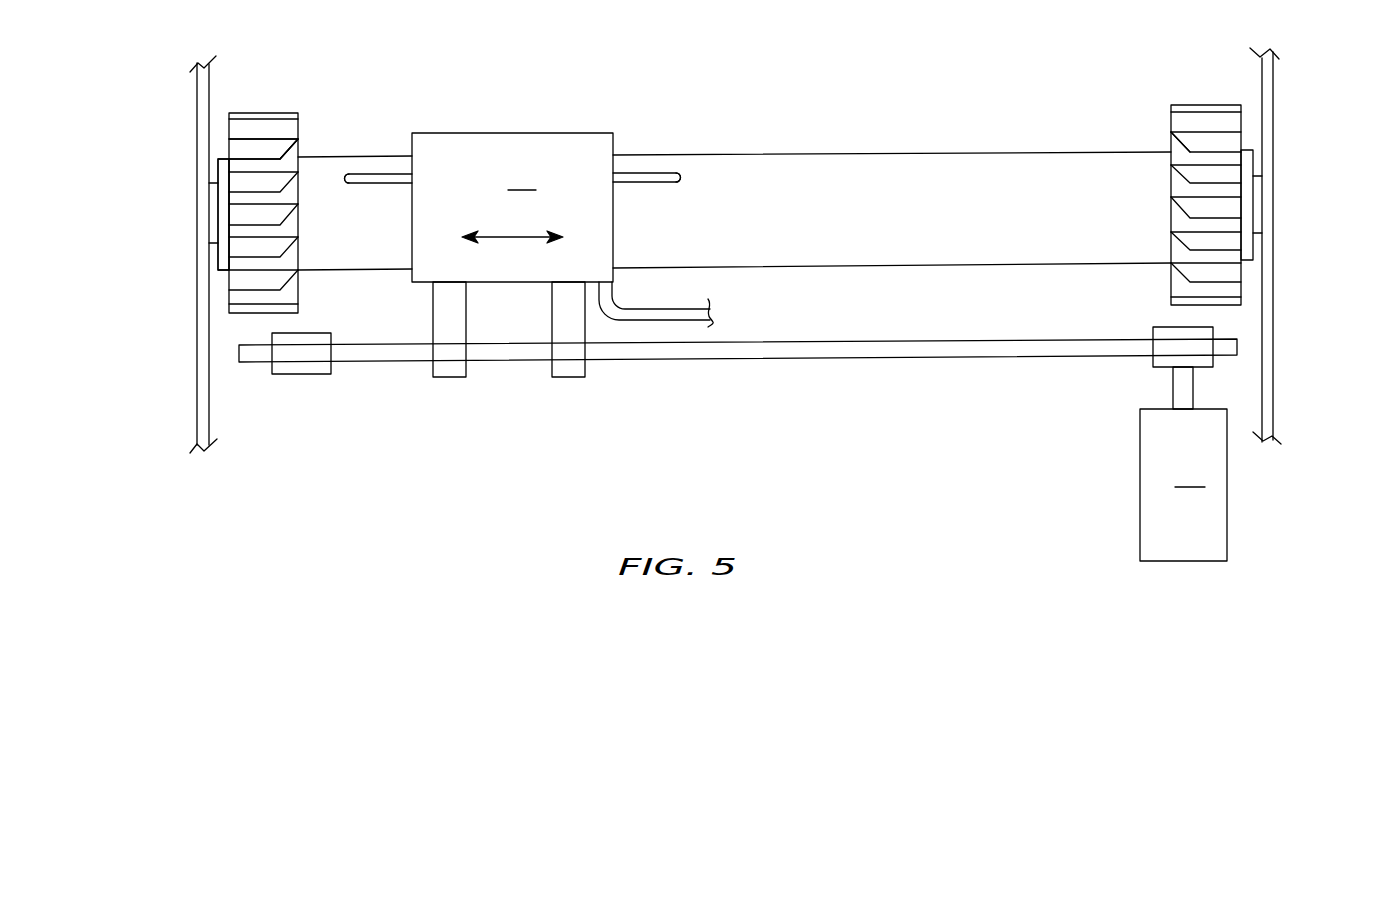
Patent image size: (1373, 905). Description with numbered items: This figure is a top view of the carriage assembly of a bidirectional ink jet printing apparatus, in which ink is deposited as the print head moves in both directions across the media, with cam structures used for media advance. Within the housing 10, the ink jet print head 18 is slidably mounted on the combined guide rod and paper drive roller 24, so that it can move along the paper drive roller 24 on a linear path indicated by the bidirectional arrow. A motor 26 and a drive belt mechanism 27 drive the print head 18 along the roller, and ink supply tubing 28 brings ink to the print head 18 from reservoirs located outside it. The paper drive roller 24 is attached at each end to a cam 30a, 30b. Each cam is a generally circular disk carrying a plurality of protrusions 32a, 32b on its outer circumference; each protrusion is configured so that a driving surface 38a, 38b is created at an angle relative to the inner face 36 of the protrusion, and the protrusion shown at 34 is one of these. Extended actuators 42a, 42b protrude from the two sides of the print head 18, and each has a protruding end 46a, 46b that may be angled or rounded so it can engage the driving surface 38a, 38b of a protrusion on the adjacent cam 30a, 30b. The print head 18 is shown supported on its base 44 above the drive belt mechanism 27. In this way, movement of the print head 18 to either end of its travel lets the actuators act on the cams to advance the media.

The housing 10 is at (203, 97).
The ink jet print head 18 is at (512, 207).
The guide rod and paper drive roller 24 is at (952, 153).
The motor 26 is at (1183, 464).
The drive belt mechanism 27 is at (912, 357).
The ink supply tubing 28 is at (668, 304).
The cam 30a is at (230, 297).
The cam 30b is at (1170, 124).
The protrusion 32a is at (250, 149).
The protrusion 32b is at (1205, 143).
The gear tooth 34 is at (272, 140).
The inner face 36 is at (255, 164).
The driving surface 38a is at (292, 155).
The driving surface 38b is at (1178, 148).
The extended actuator 42a is at (380, 186).
The extended actuator 42b is at (643, 183).
The carriage legs 44 is at (411, 274).
The protruding end 46a is at (342, 184).
The protruding end 46b is at (680, 176).